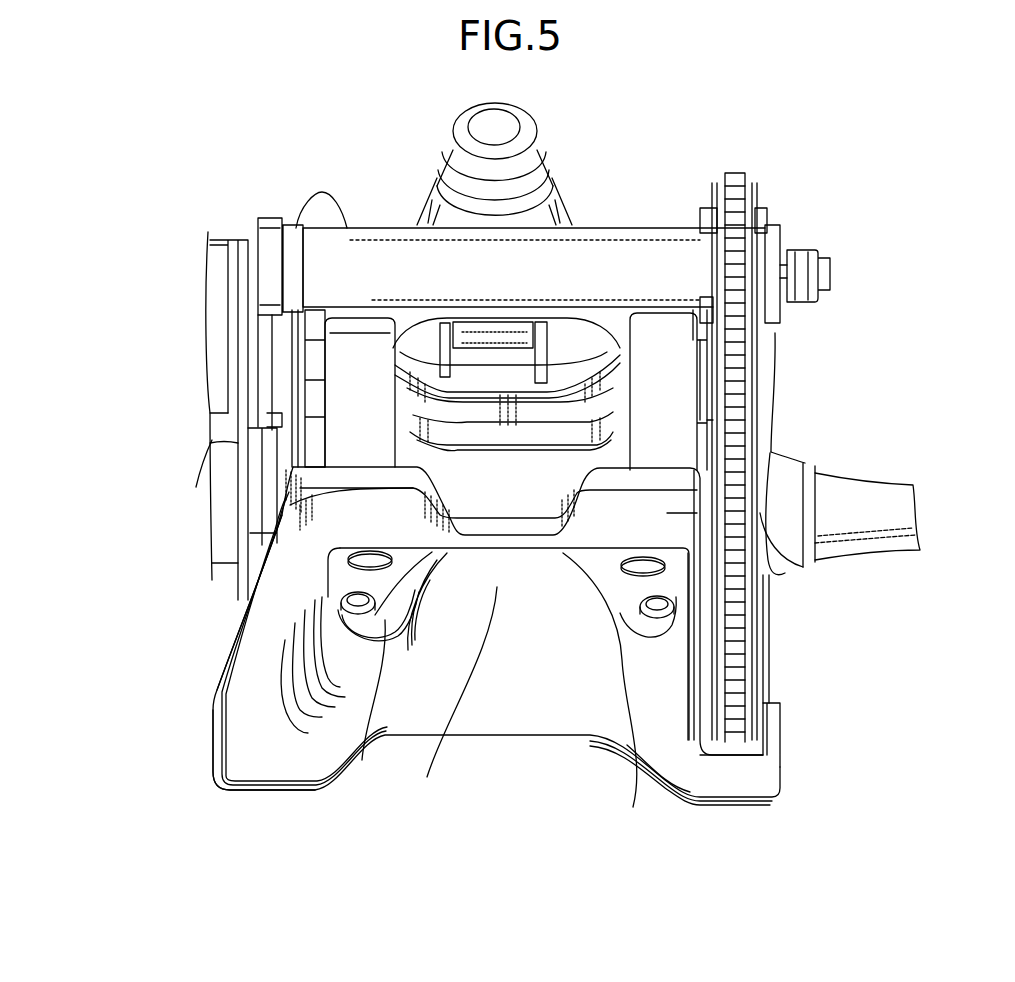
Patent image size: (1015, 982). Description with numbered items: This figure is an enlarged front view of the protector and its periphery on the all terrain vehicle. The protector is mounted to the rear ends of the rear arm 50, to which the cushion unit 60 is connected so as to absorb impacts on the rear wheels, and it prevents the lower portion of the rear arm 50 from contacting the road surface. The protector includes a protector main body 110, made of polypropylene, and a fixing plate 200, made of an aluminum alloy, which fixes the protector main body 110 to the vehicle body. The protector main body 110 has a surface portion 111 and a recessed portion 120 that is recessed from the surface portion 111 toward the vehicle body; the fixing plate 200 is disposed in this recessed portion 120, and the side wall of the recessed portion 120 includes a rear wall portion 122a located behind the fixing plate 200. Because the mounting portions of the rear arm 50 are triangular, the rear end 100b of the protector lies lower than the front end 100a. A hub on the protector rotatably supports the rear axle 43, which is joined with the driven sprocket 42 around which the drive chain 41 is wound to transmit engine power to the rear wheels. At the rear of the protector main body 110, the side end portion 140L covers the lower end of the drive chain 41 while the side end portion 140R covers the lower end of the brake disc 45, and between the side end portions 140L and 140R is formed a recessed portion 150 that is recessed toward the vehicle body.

The cushion unit 60 is at (548, 182).
The rear arm 50 is at (673, 366).
The driven sprocket 42 is at (770, 460).
The rear axle 43 is at (913, 512).
The front end 100a is at (763, 540).
The drive chain 41 is at (757, 612).
The brake disc 45 is at (207, 440).
The surface portion 111 is at (260, 625).
The protector main body 110 is at (208, 727).
The side end portion 140R is at (272, 770).
The recessed portion 120 is at (362, 760).
The rear wall portion 122a is at (427, 777).
The recessed portion 150 is at (500, 730).
The fixing plate 200 is at (633, 807).
The rear end 100b is at (727, 780).
The side end portion 140L is at (763, 772).